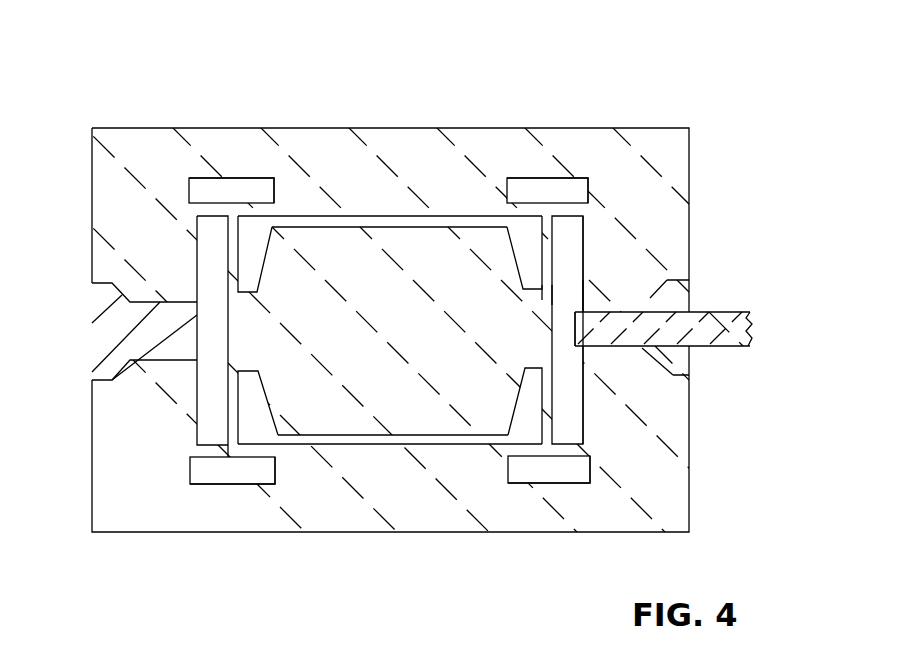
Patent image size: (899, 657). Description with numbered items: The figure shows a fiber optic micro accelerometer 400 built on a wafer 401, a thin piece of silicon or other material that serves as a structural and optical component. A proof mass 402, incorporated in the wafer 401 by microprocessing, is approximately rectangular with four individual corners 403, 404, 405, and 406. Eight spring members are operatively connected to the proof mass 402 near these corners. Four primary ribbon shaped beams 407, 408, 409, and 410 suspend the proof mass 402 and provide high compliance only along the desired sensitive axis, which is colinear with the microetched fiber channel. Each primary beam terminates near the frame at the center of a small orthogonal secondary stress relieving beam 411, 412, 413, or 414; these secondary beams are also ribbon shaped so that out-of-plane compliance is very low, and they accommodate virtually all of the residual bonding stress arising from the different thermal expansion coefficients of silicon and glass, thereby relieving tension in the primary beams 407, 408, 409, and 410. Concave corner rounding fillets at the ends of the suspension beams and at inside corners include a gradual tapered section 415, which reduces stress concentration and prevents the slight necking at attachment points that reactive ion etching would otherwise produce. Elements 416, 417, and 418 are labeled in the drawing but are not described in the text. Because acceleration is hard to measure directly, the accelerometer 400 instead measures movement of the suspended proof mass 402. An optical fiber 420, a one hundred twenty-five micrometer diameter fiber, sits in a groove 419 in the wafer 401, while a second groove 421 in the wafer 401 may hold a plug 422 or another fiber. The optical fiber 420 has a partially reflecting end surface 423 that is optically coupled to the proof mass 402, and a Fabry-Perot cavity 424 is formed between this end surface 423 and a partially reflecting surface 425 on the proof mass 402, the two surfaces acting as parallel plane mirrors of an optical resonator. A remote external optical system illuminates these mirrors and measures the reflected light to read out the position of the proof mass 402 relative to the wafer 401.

The accelerometer 400 is at (153, 64).
The wafer 401 is at (418, 506).
The proof mass 402 is at (418, 332).
The corner 403 is at (273, 227).
The corner 404 is at (503, 228).
The corner 405 is at (505, 433).
The corner 406 is at (279, 436).
The primary ribbon shaped beam 407 is at (220, 265).
The primary ribbon shaped beam 408 is at (547, 247).
The primary ribbon shaped beam 409 is at (550, 403).
The primary ribbon shaped beam 410 is at (228, 423).
The secondary stress relieving beam 411 is at (203, 203).
The secondary stress relieving beam 412 is at (572, 203).
The secondary stress relieving beam 413 is at (565, 456).
The secondary stress relieving beam 414 is at (217, 445).
The gradual tapered section 415 is at (237, 445).
The upper left pad connection 416 is at (232, 217).
The upper right pad connection 417 is at (543, 205).
The lower right pad connection 418 is at (547, 448).
The groove 419 is at (643, 347).
The optical fiber 420 is at (731, 308).
The second groove 421 is at (165, 302).
The plug 422 is at (92, 360).
The partially reflecting end surface 423 is at (575, 337).
The Fabry-Perot cavity 424 is at (586, 298).
The partially reflecting surface 425 is at (557, 300).